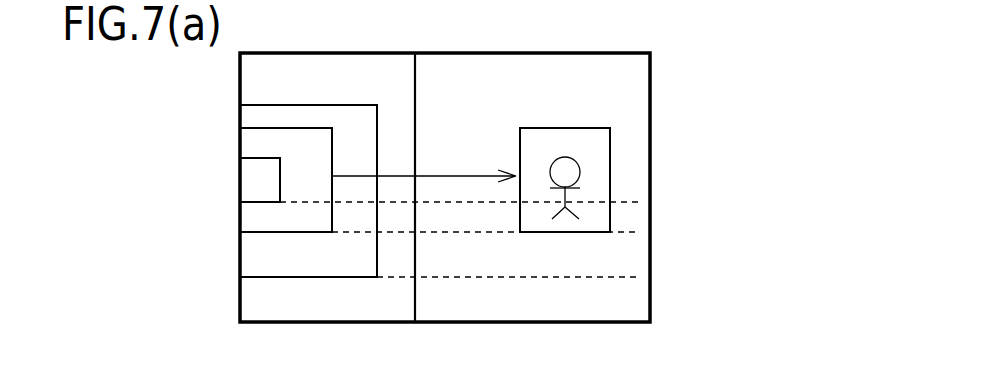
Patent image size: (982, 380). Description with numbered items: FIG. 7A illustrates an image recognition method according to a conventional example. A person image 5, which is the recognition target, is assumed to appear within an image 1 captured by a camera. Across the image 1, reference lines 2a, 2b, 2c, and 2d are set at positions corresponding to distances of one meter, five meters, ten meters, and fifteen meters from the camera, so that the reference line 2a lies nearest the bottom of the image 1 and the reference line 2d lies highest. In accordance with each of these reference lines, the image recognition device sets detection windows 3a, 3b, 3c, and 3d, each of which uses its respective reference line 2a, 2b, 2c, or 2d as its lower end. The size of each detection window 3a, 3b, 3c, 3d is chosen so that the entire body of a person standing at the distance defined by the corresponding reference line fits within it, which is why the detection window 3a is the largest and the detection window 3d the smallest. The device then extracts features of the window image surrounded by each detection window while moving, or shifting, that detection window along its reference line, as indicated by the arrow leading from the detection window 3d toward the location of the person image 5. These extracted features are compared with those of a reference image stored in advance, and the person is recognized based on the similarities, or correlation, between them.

The image 1 is at (652, 68).
The reference line 2a is at (580, 322).
The reference line 2b is at (535, 278).
The reference line 2c is at (638, 240).
The reference line 2d is at (632, 201).
The detection window 3a is at (262, 304).
The detection window 3b is at (261, 262).
The detection window 3c is at (259, 223).
The detection window 3d is at (250, 177).
The person image 5 is at (578, 163).